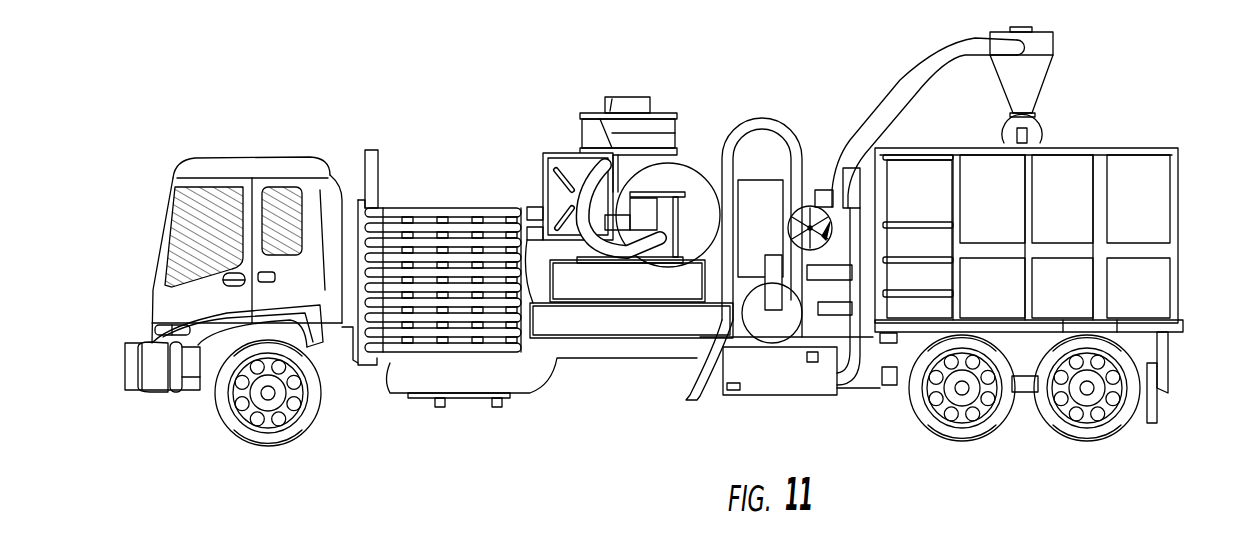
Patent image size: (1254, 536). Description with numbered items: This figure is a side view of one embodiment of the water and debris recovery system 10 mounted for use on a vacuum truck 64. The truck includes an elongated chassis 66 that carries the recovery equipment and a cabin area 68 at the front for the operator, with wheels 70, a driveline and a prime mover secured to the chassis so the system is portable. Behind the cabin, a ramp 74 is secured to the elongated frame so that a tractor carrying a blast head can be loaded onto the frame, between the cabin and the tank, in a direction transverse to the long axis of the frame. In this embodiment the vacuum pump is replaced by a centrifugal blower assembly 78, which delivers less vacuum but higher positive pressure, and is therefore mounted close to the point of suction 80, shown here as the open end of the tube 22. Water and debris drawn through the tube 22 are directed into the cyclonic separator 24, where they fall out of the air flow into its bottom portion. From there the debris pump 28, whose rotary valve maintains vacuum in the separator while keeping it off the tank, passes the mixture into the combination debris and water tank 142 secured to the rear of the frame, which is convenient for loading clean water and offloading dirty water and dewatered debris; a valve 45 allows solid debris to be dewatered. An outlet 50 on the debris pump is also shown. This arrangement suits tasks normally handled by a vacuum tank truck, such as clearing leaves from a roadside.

The water and debris recovery system 10 is at (855, 66).
The tube 22 is at (765, 118).
The cyclonic separator 24 is at (1057, 43).
The debris pump 28 is at (1037, 117).
The valve 45 is at (1176, 331).
The outlet 50 is at (1030, 133).
The vacuum truck 64 is at (280, 178).
The elongated chassis 66 is at (355, 387).
The cabin area 68 is at (217, 185).
The wheels 70 is at (258, 447).
The ramp 74 is at (420, 208).
The centrifugal blower assembly 78 is at (787, 227).
The point of suction 80 is at (690, 402).
The combination debris and water tank 142 is at (1142, 153).